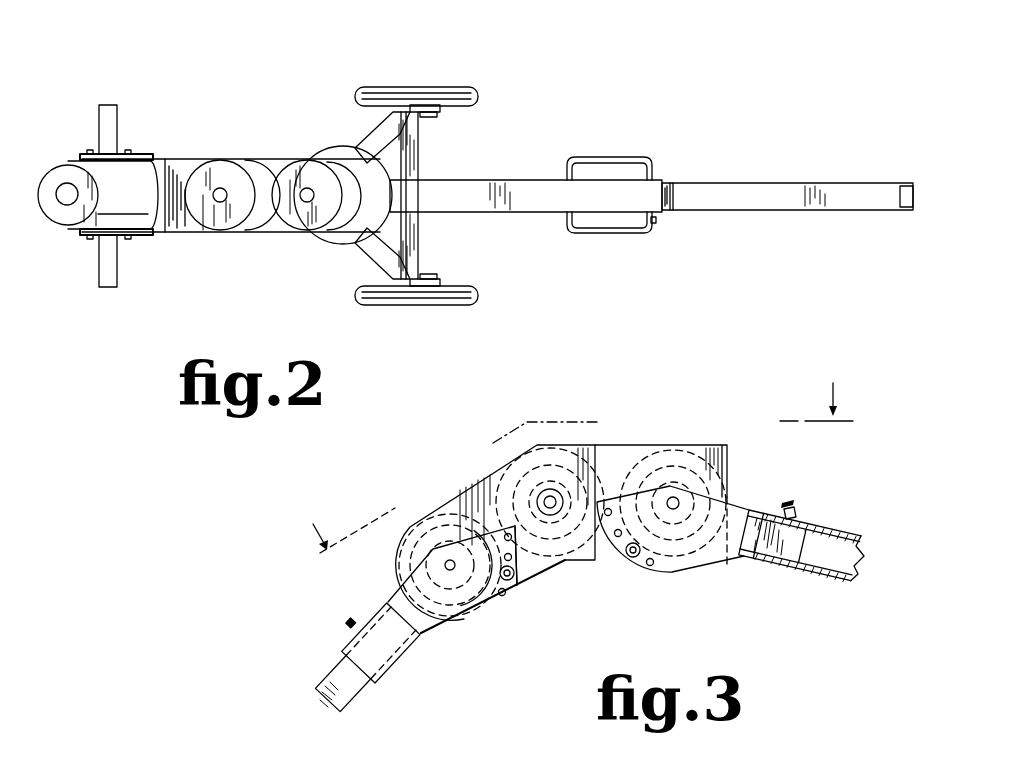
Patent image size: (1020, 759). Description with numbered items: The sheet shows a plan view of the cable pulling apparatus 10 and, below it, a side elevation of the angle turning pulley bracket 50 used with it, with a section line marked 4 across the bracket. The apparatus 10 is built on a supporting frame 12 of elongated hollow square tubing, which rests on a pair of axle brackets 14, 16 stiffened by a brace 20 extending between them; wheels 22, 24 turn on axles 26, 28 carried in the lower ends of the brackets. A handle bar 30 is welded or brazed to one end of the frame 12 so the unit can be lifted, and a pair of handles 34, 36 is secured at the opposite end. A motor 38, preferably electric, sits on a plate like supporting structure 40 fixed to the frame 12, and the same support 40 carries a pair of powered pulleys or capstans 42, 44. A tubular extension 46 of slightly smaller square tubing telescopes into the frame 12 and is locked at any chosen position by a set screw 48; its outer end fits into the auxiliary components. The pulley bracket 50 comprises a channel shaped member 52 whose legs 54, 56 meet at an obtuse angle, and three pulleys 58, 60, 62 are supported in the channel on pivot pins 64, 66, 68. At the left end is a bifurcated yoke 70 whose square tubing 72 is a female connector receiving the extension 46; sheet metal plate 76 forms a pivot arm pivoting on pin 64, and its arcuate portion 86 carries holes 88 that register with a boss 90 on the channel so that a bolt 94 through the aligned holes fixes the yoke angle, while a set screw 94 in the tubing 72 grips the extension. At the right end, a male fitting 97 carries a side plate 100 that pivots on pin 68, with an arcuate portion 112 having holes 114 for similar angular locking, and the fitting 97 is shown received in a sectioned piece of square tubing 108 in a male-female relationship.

In FIG. 2, the cable pulling apparatus 10 is at (536, 137).
In FIG. 2, the supporting frame 12 is at (532, 203).
In FIG. 2, the axle bracket 14 is at (375, 248).
In FIG. 2, the axle bracket 16 is at (380, 133).
In FIG. 2, the brace 20 is at (420, 157).
In FIG. 2, the wheel 22 is at (420, 306).
In FIG. 2, the wheel 24 is at (445, 88).
In FIG. 2, the axle 26 is at (440, 281).
In FIG. 2, the axle 28 is at (440, 108).
In FIG. 2, the handle bar 30 is at (112, 268).
In FIG. 2, the handle 34 is at (610, 234).
In FIG. 2, the handle 36 is at (638, 157).
In FIG. 2, the motor 38 is at (77, 165).
In FIG. 2, the plate like supporting structure 40 is at (158, 224).
In FIG. 2, the powered pulley or capstan 42 is at (223, 168).
In FIG. 2, the powered pulley or capstan 44 is at (310, 168).
In FIG. 2, the tubular extension 46 is at (798, 208).
In FIG. 3, the tubular extension 46 is at (323, 693).
In FIG. 2, the set screw 48 is at (654, 223).
In FIG. 3, the angle turning pulley bracket 50 is at (440, 493).
In FIG. 3, the channel shaped member 52 is at (572, 580).
In FIG. 3, the leg 54 is at (485, 500).
In FIG. 3, the leg 56 is at (608, 462).
In FIG. 3, the pulley 58 is at (423, 523).
In FIG. 3, the pulley 60 is at (566, 478).
In FIG. 3, the pulley 62 is at (677, 470).
In FIG. 3, the pivot pin 64 is at (445, 565).
In FIG. 3, the pivot pin 66 is at (548, 500).
In FIG. 3, the pivot pin 68 is at (677, 502).
In FIG. 3, the bifurcated yoke 70 is at (420, 665).
In FIG. 3, the square tubing 72 is at (397, 672).
In FIG. 3, the sheet metal plate 76 is at (428, 634).
In FIG. 3, the arcuate portion 86 is at (524, 558).
In FIG. 3, the hole 88 is at (521, 528).
In FIG. 3, the boss 90 is at (513, 578).
In FIG. 3, the bolt / set screw 94 is at (348, 623).
In FIG. 3, the male fitting 97 is at (790, 533).
In FIG. 3, the side plate 100 is at (688, 570).
In FIG. 3, the square tubing 108 is at (830, 580).
In FIG. 3, the arcuate portion 112 is at (628, 565).
In FIG. 3, the hole 114 is at (612, 538).
In FIG. 3, the section line 4 is at (578, 457).